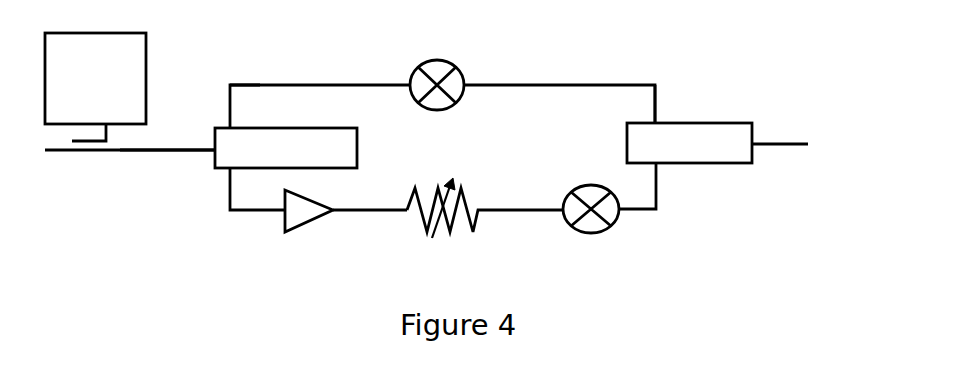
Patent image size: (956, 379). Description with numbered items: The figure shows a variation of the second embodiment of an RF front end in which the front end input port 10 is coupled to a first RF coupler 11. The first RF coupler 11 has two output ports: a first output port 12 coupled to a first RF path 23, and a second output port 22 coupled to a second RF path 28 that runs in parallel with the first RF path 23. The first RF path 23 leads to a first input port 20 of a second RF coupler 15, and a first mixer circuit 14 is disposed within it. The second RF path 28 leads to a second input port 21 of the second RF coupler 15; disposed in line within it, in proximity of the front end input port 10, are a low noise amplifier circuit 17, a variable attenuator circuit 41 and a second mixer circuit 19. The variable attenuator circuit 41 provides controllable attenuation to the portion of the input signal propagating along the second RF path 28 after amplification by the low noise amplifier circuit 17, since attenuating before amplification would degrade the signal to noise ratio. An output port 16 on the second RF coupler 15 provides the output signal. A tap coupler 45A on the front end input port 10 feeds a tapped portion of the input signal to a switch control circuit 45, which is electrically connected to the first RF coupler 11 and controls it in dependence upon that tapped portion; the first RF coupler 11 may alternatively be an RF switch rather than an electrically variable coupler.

The switch control circuit 45 is at (95, 87).
The tap coupler 45A is at (95, 154).
The front end input port 10 is at (180, 150).
The first RF coupler 11 is at (215, 158).
The first output port 12 is at (229, 126).
The second output port 22 is at (240, 170).
The first RF path 23 is at (295, 86).
The first mixer circuit 14 is at (463, 84).
The second RF coupler 15 is at (627, 133).
The first input port 20 is at (658, 119).
The second input port 21 is at (658, 165).
The output port 16 is at (778, 143).
The low noise amplifier circuit 17 is at (305, 226).
The second RF path 28 is at (360, 210).
The variable attenuator circuit 41 is at (455, 228).
The second mixer circuit 19 is at (608, 226).